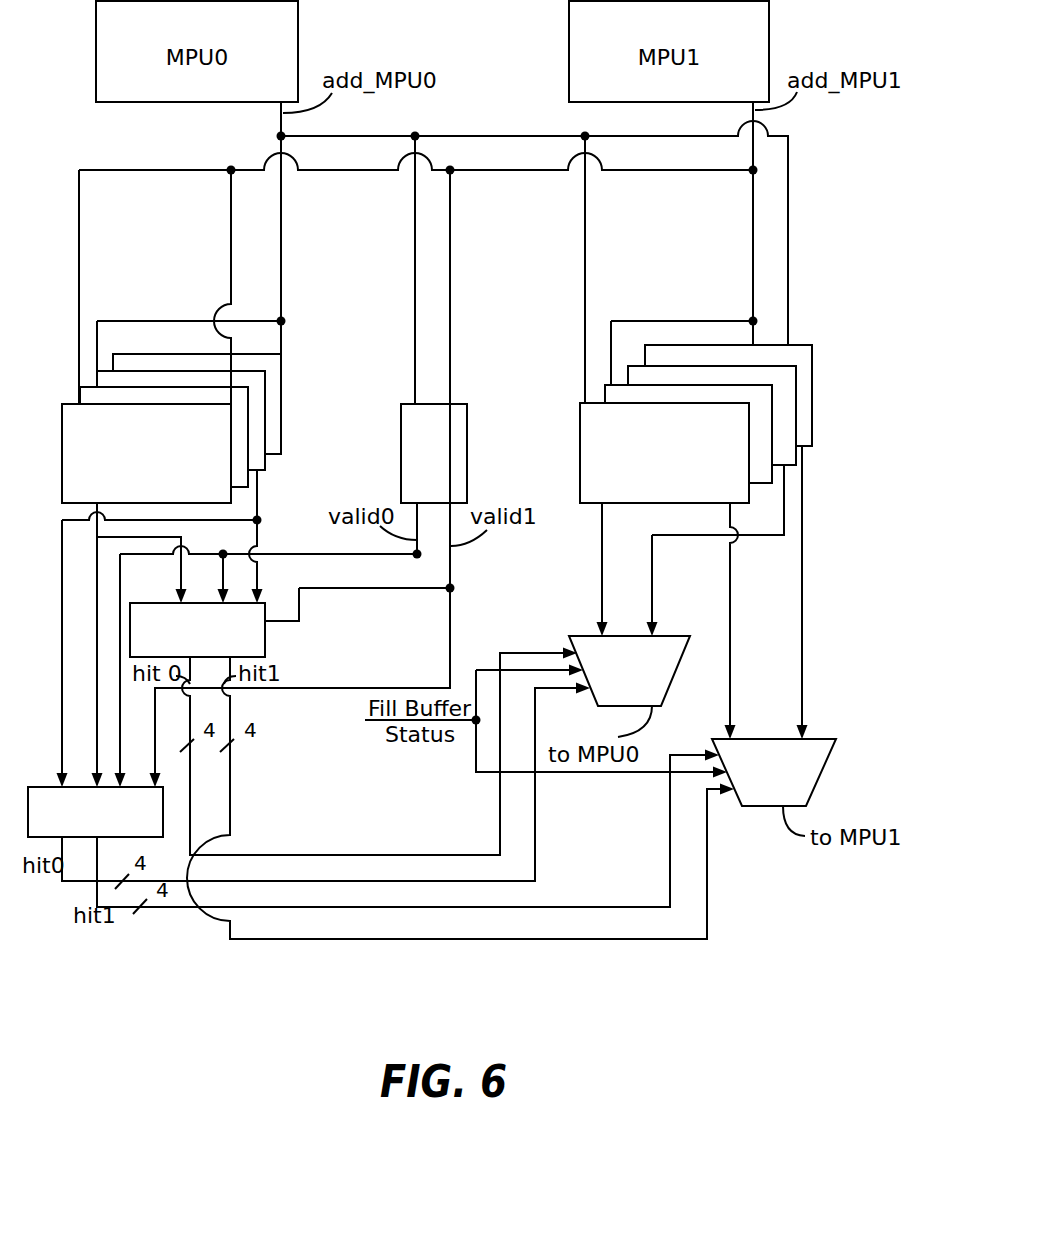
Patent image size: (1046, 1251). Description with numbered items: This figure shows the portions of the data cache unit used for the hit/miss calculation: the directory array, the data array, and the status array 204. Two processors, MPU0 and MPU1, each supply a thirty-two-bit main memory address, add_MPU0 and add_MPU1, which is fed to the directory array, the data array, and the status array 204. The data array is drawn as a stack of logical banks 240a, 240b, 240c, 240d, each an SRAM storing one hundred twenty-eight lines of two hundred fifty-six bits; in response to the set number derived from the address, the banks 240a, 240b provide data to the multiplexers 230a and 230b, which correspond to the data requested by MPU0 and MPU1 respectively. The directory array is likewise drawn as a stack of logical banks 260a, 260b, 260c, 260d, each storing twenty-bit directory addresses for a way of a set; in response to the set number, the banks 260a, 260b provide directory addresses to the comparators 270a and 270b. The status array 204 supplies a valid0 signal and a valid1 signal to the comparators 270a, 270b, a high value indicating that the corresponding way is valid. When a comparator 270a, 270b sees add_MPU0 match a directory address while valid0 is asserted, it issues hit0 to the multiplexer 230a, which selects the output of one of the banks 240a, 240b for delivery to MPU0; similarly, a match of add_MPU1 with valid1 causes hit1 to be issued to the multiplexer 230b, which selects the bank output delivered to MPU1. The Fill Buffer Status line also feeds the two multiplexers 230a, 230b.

The status array 204 is at (434, 453).
The multiplexer 230a is at (629, 671).
The multiplexer 230b is at (774, 772).
The logical bank 240a is at (664, 453).
The logical bank 240b is at (688, 434).
The logical bank 240c is at (712, 415).
The logical bank 240d is at (728, 395).
The logical bank 260a is at (146, 453).
The logical bank 260b is at (164, 436).
The logical bank 260c is at (181, 419).
The logical bank 260d is at (197, 403).
The comparator 270a is at (197, 630).
The comparator 270b is at (95, 812).